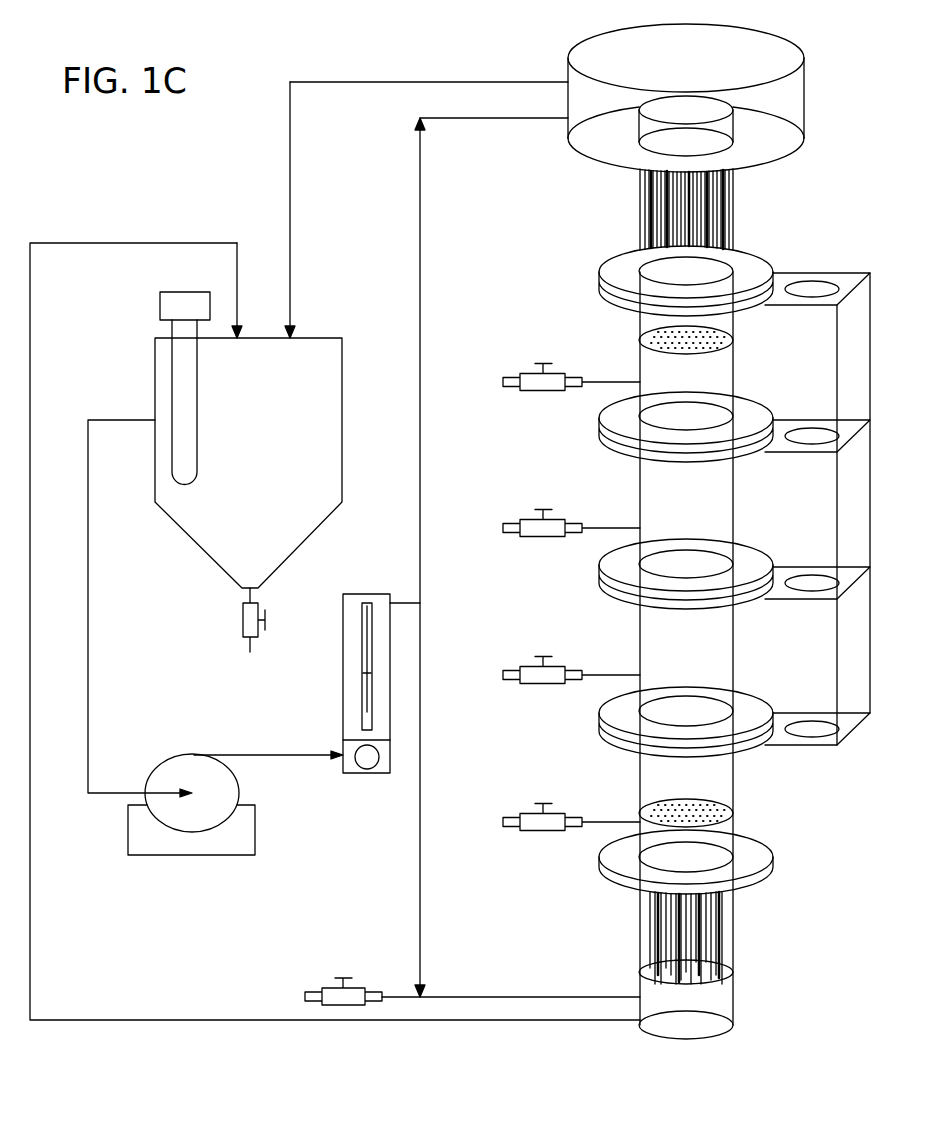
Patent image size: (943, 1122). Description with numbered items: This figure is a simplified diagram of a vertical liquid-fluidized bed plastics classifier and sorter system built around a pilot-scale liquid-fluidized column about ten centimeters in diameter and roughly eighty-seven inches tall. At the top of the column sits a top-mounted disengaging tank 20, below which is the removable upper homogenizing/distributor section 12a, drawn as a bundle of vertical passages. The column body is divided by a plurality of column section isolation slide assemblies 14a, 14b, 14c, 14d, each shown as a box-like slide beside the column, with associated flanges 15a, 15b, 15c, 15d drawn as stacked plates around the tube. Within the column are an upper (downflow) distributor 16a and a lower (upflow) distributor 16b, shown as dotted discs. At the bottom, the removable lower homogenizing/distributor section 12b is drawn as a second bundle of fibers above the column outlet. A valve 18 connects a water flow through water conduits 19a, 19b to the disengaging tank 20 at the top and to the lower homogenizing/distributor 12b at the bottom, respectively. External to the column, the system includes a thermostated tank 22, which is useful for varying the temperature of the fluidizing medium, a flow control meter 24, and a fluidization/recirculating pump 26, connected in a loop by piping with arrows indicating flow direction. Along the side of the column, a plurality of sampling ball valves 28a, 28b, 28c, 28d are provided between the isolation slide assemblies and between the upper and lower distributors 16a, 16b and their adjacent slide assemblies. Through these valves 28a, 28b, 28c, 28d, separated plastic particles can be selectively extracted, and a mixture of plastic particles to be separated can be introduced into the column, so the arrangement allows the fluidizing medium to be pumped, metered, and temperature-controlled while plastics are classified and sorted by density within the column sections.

The upper homogenizing/distributor section 12a is at (736, 207).
The lower homogenizing/distributor section 12b is at (737, 915).
The column section isolation slide assembly 14a is at (800, 308).
The column section isolation slide assembly 14b is at (800, 455).
The column section isolation slide assembly 14c is at (800, 601).
The column section isolation slide assembly 14d is at (800, 748).
The flange 15a is at (600, 276).
The flange 15b is at (600, 432).
The flange 15c is at (600, 580).
The flange 15d is at (600, 727).
The upper (downflow) distributor 16a is at (628, 336).
The lower (upflow) distributor 16b is at (745, 809).
The valve 18 is at (327, 986).
The water conduit 19a is at (514, 120).
The water conduit 19b is at (500, 996).
The disengaging tank 20 is at (793, 112).
The thermostated tank 22 is at (342, 360).
The flow control meter 24 is at (343, 625).
The fluidization/recirculating pump 26 is at (255, 806).
The sampling ball valve 28a is at (540, 392).
The sampling ball valve 28b is at (540, 538).
The sampling ball valve 28c is at (540, 685).
The sampling ball valve 28d is at (540, 832).